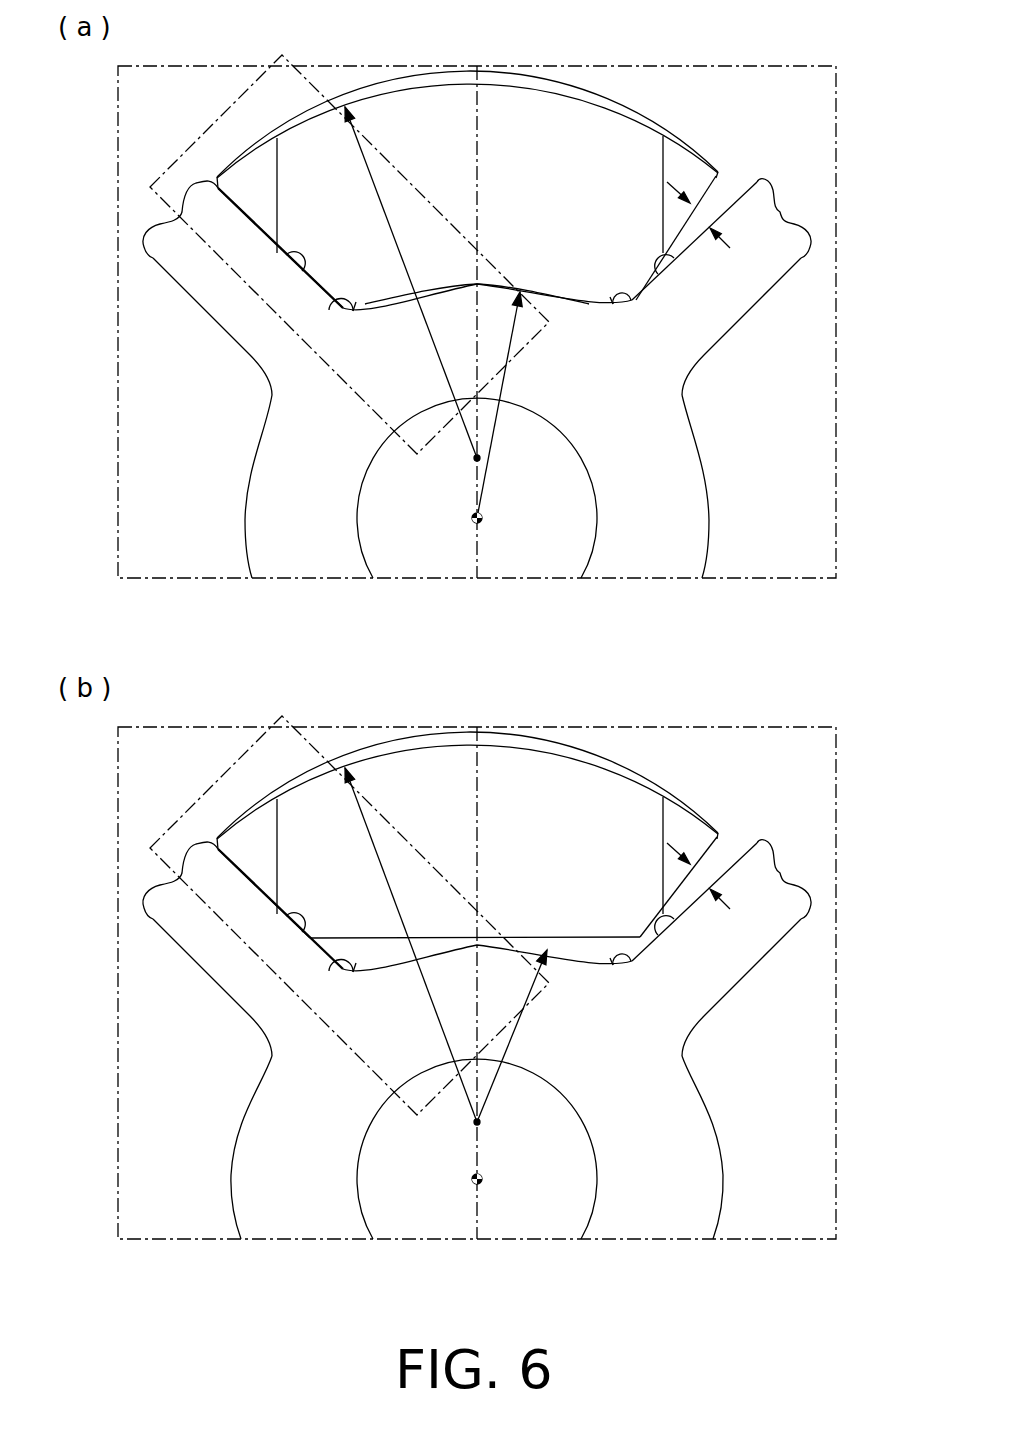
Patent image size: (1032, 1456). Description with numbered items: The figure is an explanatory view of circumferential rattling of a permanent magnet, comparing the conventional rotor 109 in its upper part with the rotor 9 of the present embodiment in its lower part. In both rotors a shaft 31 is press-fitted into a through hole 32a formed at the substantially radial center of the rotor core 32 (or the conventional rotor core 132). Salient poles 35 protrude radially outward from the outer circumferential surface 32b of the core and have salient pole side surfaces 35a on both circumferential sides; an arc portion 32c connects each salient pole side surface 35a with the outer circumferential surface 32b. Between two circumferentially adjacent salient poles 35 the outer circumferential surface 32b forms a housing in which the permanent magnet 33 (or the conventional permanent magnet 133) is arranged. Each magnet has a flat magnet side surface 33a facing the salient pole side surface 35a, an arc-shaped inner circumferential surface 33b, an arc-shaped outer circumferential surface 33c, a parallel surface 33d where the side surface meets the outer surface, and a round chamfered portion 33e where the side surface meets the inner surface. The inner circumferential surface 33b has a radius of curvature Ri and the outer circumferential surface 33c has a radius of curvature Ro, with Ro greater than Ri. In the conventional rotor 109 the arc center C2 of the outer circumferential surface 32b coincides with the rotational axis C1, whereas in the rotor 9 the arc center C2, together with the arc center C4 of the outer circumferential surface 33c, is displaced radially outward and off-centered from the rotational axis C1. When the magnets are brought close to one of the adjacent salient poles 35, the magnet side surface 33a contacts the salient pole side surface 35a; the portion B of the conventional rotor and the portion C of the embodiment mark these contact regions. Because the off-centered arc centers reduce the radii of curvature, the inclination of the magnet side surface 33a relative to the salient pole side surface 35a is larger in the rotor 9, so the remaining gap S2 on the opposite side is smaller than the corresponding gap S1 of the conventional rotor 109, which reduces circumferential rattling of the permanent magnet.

The rotor 9 is at (788, 757).
The conventional rotor 109 is at (788, 96).
The shaft 31 is at (358, 505).
The rotor core 32 is at (722, 1154).
The rotor core 132 is at (708, 493).
The through hole 32a is at (363, 541).
The outer circumferential surface 32b is at (500, 283).
The arc portion 32c is at (324, 310).
The permanent magnet 33 is at (666, 778).
The permanent magnet 133 is at (666, 117).
The magnet side surface 33a is at (243, 215).
The inner circumferential surface 33b is at (433, 292).
The outer circumferential surface 33c is at (302, 114).
The parallel surface 33d is at (214, 180).
The round chamfered portion 33e is at (357, 313).
The salient pole 35 is at (201, 305).
The salient pole side surface 35a is at (297, 292).
The portion B is at (397, 165).
The portion C is at (397, 826).
The rotational axis C1 is at (481, 524).
The arc center C2 is at (481, 1126).
The arc center C4 is at (477, 458).
The radius of curvature Ro is at (410, 945).
The radius of curvature Ri is at (512, 1036).
The gap S1 is at (690, 222).
The gap S2 is at (690, 883).